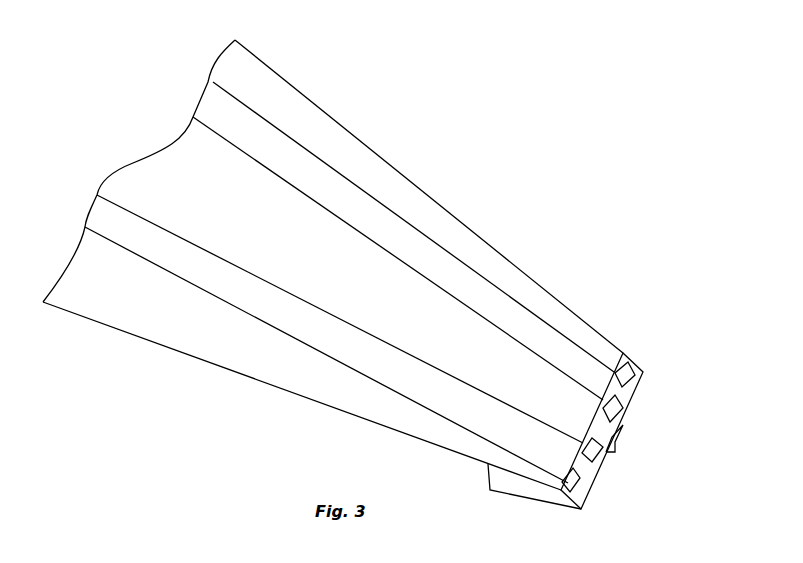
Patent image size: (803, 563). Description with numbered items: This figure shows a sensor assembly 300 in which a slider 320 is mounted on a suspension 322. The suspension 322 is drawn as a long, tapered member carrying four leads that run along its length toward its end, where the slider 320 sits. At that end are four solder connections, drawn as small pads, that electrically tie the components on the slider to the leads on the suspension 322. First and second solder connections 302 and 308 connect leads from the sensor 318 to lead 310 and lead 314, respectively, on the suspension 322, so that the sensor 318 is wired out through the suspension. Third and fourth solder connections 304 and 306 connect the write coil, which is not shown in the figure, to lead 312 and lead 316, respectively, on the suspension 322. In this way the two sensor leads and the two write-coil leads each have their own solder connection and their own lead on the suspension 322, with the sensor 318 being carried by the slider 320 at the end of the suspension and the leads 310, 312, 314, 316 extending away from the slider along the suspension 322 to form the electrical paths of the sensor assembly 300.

The sensor assembly 300 is at (190, 427).
The first solder connection 302 is at (573, 490).
The third solder connection 304 is at (596, 466).
The fourth solder connection 306 is at (615, 402).
The second solder connection 308 is at (643, 371).
The lead 310 is at (298, 334).
The lead 312 is at (435, 364).
The lead 314 is at (488, 279).
The lead 316 is at (543, 356).
The sensor 318 is at (618, 440).
The slider 320 is at (519, 487).
The suspension 322 is at (423, 437).